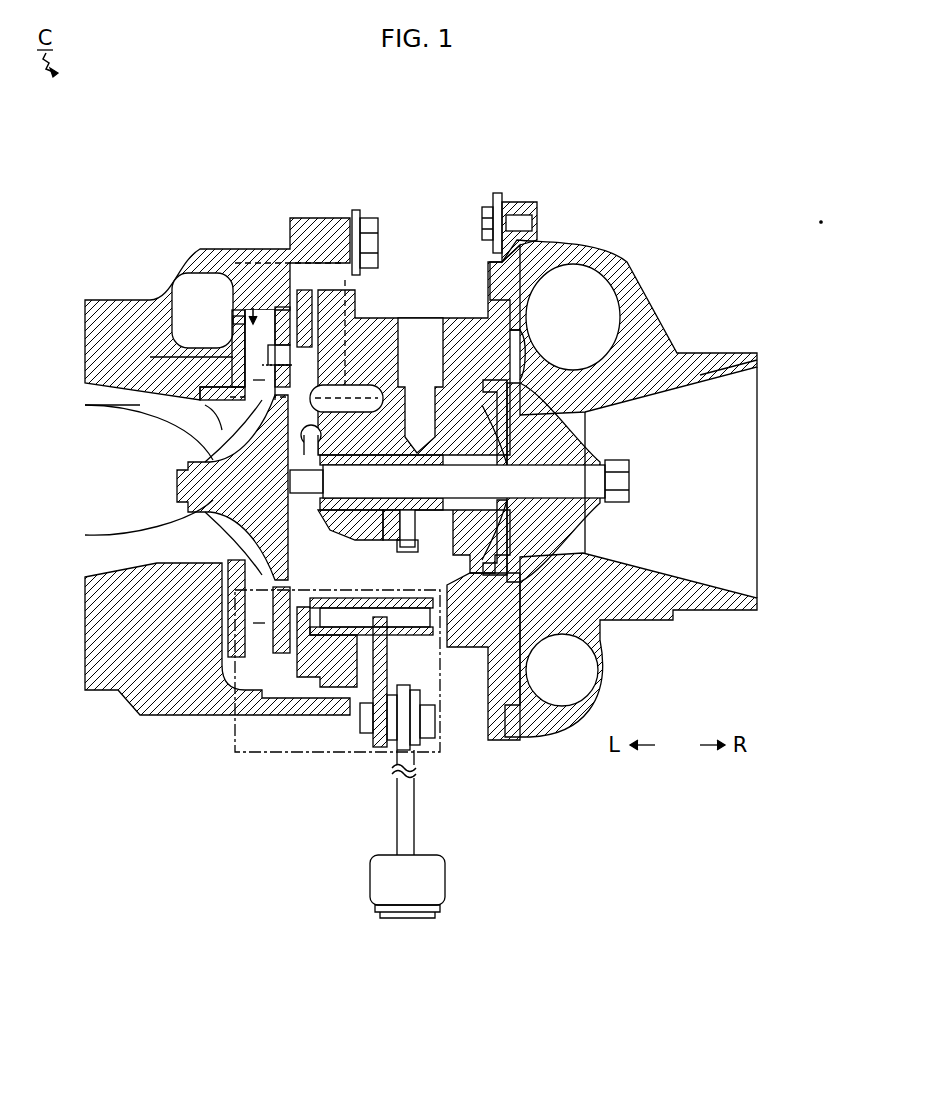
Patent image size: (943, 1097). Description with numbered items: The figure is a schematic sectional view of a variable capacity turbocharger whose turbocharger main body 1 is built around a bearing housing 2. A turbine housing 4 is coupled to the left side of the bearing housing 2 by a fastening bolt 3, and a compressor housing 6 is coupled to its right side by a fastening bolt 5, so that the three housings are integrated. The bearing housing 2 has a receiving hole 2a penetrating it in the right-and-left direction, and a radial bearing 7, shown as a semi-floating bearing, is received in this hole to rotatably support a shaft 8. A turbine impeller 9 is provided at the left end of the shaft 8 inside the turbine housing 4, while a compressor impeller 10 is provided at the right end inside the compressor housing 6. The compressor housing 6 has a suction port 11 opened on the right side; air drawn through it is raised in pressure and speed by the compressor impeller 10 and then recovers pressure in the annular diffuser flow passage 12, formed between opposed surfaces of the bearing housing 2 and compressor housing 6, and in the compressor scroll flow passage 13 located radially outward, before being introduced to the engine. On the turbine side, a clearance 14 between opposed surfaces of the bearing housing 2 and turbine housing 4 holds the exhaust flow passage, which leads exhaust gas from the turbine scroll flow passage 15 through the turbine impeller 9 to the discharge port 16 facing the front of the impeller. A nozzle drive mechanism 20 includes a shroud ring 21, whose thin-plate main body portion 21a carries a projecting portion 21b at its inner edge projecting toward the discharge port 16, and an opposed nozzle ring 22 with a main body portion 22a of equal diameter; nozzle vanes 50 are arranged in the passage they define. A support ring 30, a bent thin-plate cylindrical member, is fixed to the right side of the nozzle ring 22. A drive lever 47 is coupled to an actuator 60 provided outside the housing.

The turbocharger main body 1 is at (88, 123).
The bearing housing 2 is at (455, 318).
The receiving hole 2a is at (383, 470).
The fastening bolt 3 is at (368, 212).
The turbine housing 4 is at (118, 300).
The fastening bolt 5 is at (490, 205).
The compressor housing 6 is at (697, 353).
The radial bearing 7 is at (410, 497).
The shaft 8 is at (427, 480).
The turbine impeller 9 is at (200, 535).
The compressor impeller 10 is at (663, 430).
The suction port 11 is at (720, 374).
The diffuser flow passage 12 is at (527, 325).
The compressor scroll flow passage 13 is at (565, 327).
The clearance 14 is at (150, 359).
The turbine scroll flow passage 15 is at (187, 322).
The discharge port 16 is at (140, 405).
The nozzle drive mechanism 20 is at (268, 335).
The shroud ring 21 is at (245, 330).
The main body portion 21a is at (232, 318).
The projecting portion 21b is at (215, 415).
The nozzle ring 22 is at (288, 320).
The main body portion 22a is at (262, 343).
The support ring 30 is at (316, 715).
The drive lever 47 is at (390, 662).
The nozzle vanes 50 is at (253, 308).
The actuator 60 is at (437, 876).